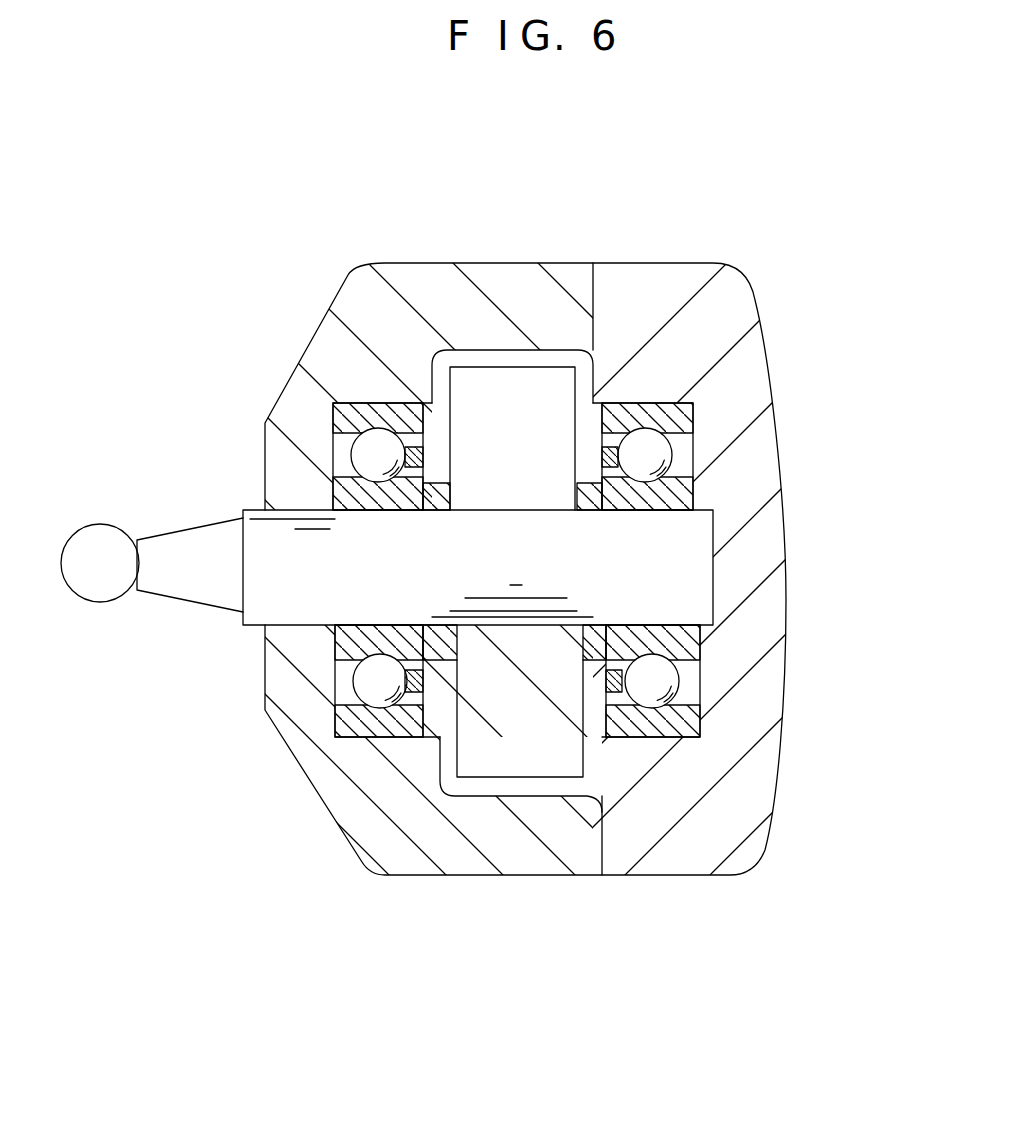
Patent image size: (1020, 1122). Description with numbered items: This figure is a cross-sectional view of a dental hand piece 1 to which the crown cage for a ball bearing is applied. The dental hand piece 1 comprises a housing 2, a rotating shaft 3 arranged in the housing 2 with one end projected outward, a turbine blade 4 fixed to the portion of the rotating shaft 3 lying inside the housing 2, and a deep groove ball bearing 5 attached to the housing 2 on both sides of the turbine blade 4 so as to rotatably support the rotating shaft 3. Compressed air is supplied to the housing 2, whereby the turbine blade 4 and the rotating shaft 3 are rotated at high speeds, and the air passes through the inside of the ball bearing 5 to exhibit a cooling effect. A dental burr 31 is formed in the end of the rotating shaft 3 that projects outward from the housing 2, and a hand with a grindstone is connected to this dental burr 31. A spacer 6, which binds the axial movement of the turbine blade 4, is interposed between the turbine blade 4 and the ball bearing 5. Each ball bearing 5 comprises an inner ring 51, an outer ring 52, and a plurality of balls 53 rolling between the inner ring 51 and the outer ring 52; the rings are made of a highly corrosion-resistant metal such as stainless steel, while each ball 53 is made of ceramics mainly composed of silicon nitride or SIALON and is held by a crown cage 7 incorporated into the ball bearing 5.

The dental hand piece 1 is at (725, 248).
The housing 2 is at (747, 850).
The rotating shaft 3 is at (471, 608).
The dental burr 31 is at (100, 593).
The turbine blade 4 is at (525, 763).
The deep groove ball bearing 5 is at (518, 631).
The inner ring 51 is at (372, 493).
The outer ring 52 is at (376, 410).
The ball 53 is at (372, 683).
The spacer 6 is at (443, 508).
The crown cage 7 is at (403, 463).